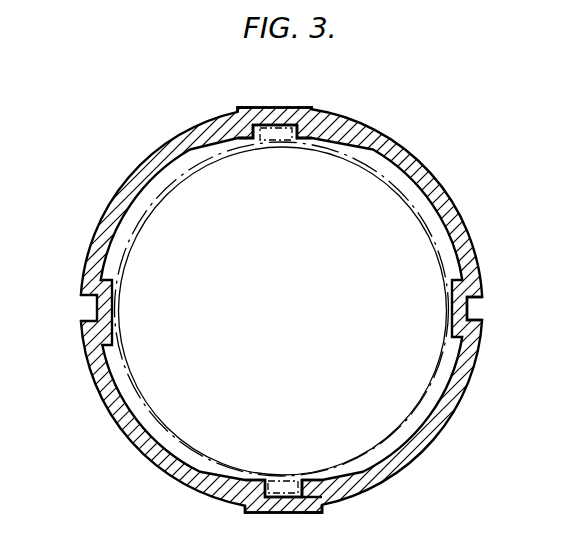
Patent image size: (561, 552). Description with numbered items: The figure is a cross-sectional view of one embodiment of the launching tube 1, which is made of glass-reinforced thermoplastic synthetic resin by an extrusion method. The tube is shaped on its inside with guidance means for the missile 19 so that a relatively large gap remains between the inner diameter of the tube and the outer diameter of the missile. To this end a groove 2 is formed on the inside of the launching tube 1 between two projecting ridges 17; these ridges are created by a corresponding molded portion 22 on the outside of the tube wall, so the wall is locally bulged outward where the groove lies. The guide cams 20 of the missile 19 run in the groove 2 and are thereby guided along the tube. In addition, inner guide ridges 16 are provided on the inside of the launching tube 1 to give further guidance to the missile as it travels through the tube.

The ring body 1 is at (442, 207).
The groove 2 is at (268, 123).
The inner guide ridges 16 is at (462, 327).
The projecting ridges 17 is at (251, 131).
The missile 19 is at (400, 423).
The guide cams 20 is at (277, 132).
The molded portion 22 is at (305, 110).